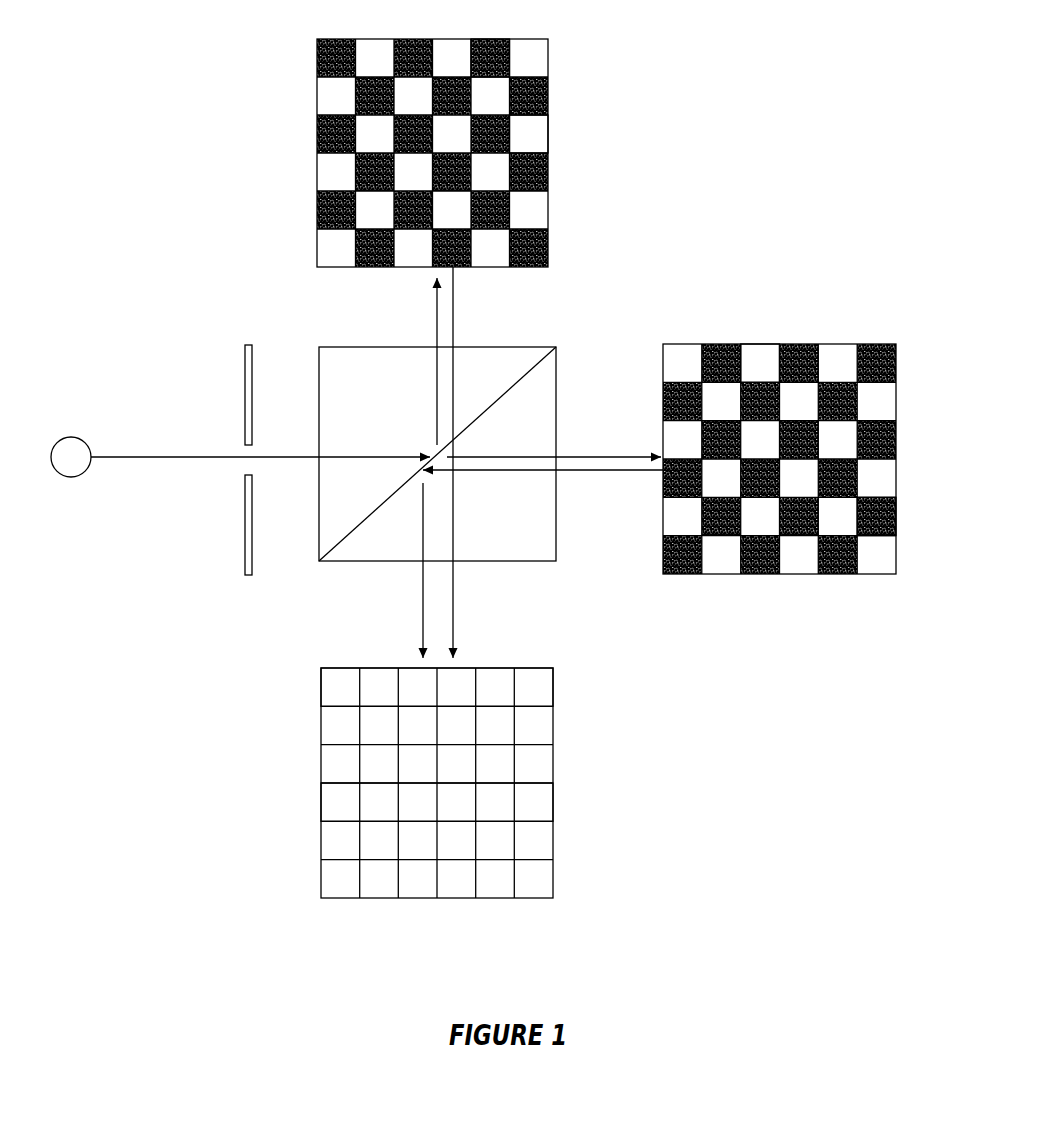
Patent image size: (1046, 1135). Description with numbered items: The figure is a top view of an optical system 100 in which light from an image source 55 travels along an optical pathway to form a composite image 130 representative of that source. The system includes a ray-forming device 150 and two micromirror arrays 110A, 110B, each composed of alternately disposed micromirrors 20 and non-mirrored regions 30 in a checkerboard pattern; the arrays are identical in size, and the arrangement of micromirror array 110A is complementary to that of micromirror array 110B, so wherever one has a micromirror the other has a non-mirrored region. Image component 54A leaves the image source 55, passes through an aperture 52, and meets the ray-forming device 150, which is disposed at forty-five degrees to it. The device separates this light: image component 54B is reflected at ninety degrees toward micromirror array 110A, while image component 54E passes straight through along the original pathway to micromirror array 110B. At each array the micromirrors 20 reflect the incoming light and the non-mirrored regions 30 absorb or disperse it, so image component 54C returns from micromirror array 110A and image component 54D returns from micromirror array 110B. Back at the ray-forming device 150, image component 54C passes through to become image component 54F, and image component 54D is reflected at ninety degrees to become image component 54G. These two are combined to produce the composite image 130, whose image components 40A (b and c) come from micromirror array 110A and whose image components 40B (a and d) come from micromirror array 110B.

The optical system 100 is at (809, 86).
The micromirror array 110A is at (432, 136).
The micromirror array 110B is at (779, 444).
The composite image 130 is at (435, 768).
The ray-forming device 150 is at (376, 425).
The micromirrors 20 is at (727, 241).
The non-mirrored regions 30 is at (717, 271).
The image components 40A is at (544, 680).
The image components 40B is at (544, 793).
The aperture 52 is at (207, 460).
The image source 55 is at (71, 457).
The image component 54A is at (256, 480).
The image component 54B is at (383, 361).
The image component 54C is at (505, 368).
The image component 54D is at (543, 494).
The image component 54E is at (554, 434).
The image component 54F is at (505, 564).
The image component 54G is at (370, 570).